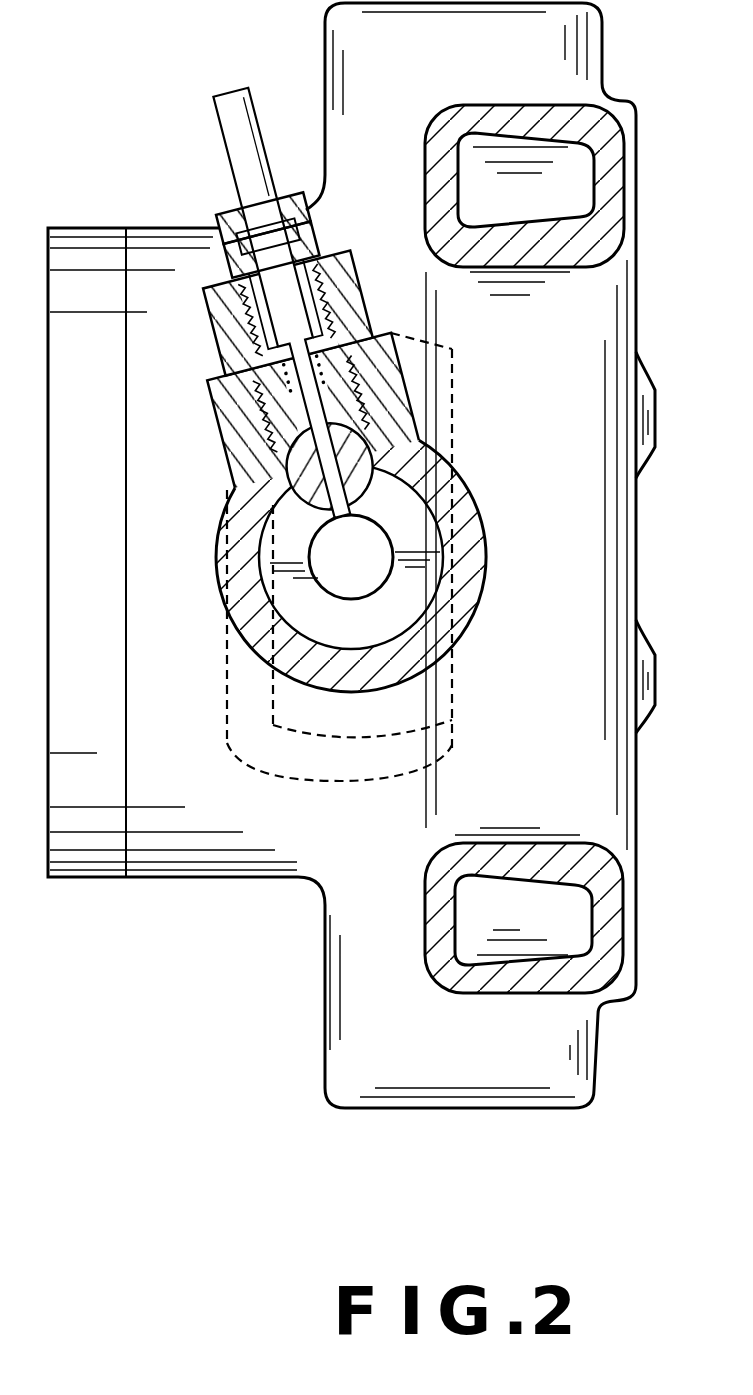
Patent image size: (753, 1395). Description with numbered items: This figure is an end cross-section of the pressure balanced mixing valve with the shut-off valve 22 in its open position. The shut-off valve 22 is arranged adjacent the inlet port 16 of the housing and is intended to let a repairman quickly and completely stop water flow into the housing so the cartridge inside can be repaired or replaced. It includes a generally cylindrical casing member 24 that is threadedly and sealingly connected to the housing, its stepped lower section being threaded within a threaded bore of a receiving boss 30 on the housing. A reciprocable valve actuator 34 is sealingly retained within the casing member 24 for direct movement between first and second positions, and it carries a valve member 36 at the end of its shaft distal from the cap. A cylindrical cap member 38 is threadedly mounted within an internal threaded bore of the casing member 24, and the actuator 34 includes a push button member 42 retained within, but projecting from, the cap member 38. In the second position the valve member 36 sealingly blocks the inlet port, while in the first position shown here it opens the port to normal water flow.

The inlet port 16 is at (397, 551).
The shut-off valve 22 is at (207, 272).
The casing member 24 is at (204, 302).
The receiving boss 30 is at (209, 402).
The valve actuator 34 is at (284, 186).
The valve member 36 is at (370, 490).
The cap member 38 is at (317, 222).
The push button member 42 is at (213, 95).